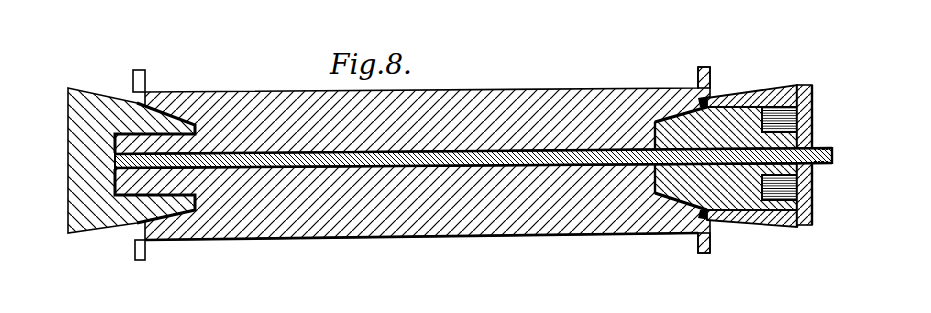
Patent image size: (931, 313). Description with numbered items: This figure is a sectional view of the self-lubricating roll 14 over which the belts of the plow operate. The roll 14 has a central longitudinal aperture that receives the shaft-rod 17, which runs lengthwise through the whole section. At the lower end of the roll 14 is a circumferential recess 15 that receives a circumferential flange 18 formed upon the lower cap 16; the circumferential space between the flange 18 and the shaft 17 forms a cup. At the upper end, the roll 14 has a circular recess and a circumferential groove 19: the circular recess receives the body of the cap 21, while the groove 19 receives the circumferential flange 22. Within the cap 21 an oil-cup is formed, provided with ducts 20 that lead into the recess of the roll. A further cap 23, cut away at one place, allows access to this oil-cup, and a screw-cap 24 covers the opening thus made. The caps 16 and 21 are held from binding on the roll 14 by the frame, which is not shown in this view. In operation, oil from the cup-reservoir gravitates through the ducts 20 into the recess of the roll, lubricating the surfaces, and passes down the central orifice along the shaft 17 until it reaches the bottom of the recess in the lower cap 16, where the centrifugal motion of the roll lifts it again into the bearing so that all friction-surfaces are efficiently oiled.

The roll 14 is at (412, 160).
The circumferential recess 15 is at (135, 103).
The lower cap 16 is at (77, 118).
The shaft-rod 17 is at (496, 166).
The circumferential flange 18 is at (155, 163).
The circumferential groove 19 is at (714, 98).
The ducts 20 is at (726, 158).
The cap 21 is at (766, 88).
The circumferential flange 22 is at (717, 249).
The cap 23 is at (797, 228).
The screw-cap 24 is at (811, 87).